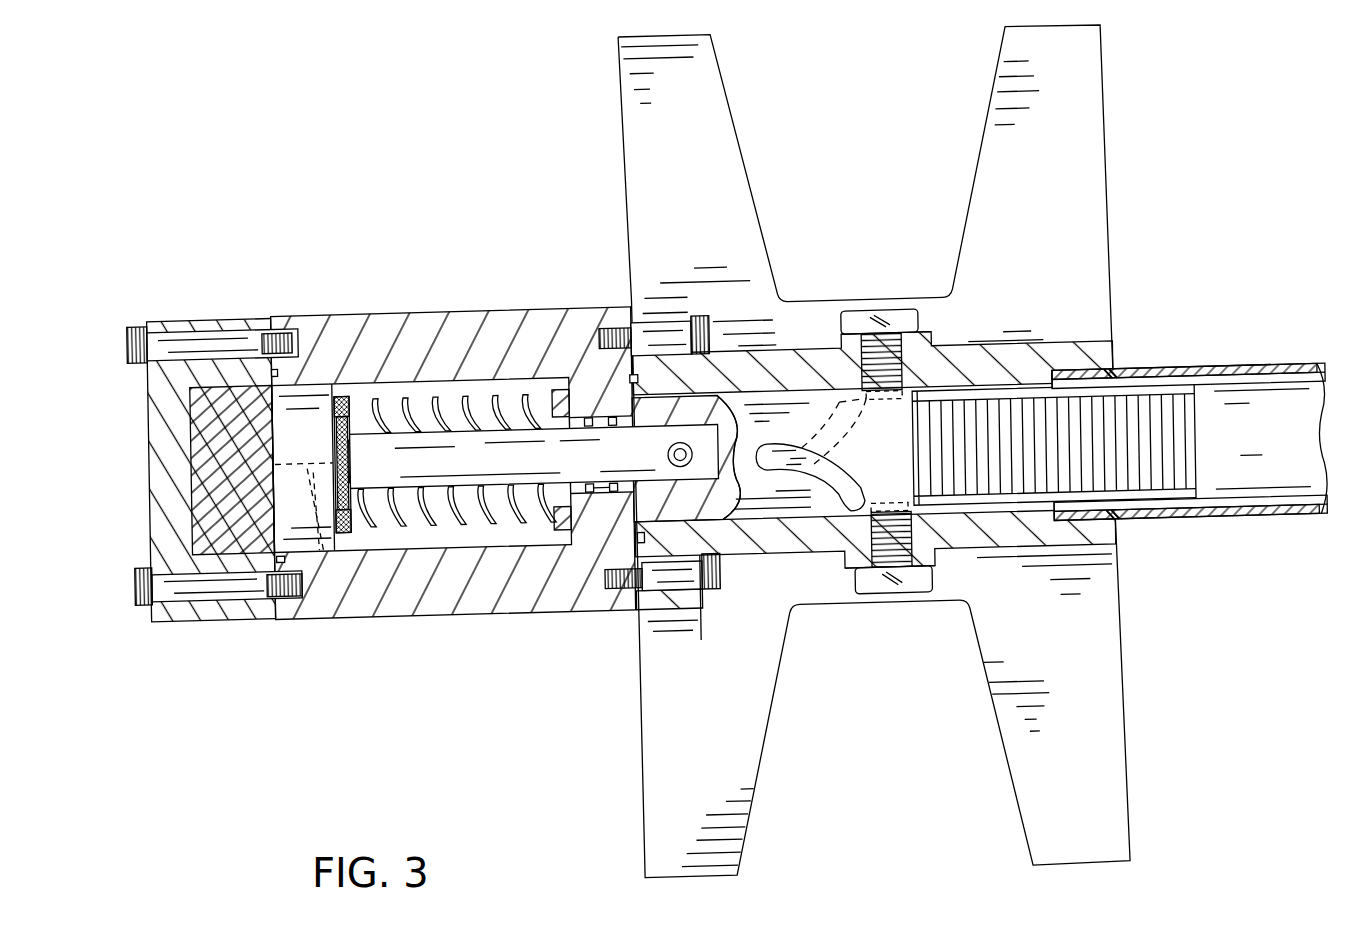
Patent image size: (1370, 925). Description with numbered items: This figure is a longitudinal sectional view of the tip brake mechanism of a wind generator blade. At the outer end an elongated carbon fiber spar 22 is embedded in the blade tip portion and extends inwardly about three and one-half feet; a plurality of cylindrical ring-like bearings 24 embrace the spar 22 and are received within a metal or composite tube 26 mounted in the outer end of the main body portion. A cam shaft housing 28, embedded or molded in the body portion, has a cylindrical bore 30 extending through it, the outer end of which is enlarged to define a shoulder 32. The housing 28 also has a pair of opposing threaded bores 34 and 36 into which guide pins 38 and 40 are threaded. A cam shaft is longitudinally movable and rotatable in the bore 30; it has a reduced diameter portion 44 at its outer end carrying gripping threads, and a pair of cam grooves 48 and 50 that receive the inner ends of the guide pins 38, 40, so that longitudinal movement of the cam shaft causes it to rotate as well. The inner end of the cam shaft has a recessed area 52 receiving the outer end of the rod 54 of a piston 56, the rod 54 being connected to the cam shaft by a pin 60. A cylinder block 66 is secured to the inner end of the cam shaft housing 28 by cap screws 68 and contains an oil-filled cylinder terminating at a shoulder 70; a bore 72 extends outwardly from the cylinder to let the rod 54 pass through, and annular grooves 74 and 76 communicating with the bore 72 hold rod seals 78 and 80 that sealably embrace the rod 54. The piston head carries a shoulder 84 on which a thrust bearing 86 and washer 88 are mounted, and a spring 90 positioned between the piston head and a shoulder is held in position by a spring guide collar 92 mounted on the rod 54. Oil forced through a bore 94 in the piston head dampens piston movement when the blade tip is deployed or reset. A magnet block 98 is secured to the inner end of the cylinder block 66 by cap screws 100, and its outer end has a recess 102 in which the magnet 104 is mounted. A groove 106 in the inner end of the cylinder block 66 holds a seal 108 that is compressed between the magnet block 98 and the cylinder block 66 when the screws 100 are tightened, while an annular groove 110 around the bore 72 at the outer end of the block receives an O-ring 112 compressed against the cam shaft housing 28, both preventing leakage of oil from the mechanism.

The carbon fiber spar 22 is at (1284, 419).
The cylindrical ring-like bearings 24 is at (1120, 384).
The metal or composite tube 26 is at (1243, 382).
The cam shaft housing 28 is at (860, 305).
The cylindrical bore 30 is at (818, 358).
The shoulder 32 is at (1055, 397).
The threaded bore 34 is at (905, 370).
The threaded bore 36 is at (932, 551).
The guide pin 38 is at (898, 325).
The guide pin 40 is at (892, 603).
The reduced diameter portion 44 is at (1148, 432).
The cam groove 48 is at (850, 436).
The cam groove 50 is at (825, 486).
The recessed area 52 is at (652, 350).
The rod 54 is at (484, 474).
The piston 56 is at (490, 427).
The pin 60 is at (815, 355).
The cylinder block 66 is at (384, 311).
The cap screws 68 is at (730, 320).
The shoulder 70 is at (562, 412).
The opening or bore 72 is at (605, 490).
The annular groove 74 is at (589, 490).
The annular groove 76 is at (598, 413).
The rod seal 78 is at (585, 482).
The rod seal 80 is at (607, 423).
The shoulder 84 is at (350, 445).
The thrust bearing 86 is at (338, 530).
The washer 88 is at (350, 523).
The spring 90 is at (425, 512).
The spring guide collar 92 is at (553, 392).
The bore 94 is at (318, 545).
The magnet block 98 is at (145, 451).
The cap screws 100 is at (129, 328).
The recess 102 is at (198, 430).
The magnet 104 is at (222, 522).
The groove 106 is at (280, 360).
The seal 108 is at (272, 361).
The annular groove 110 is at (640, 541).
The O-ring 112 is at (698, 612).